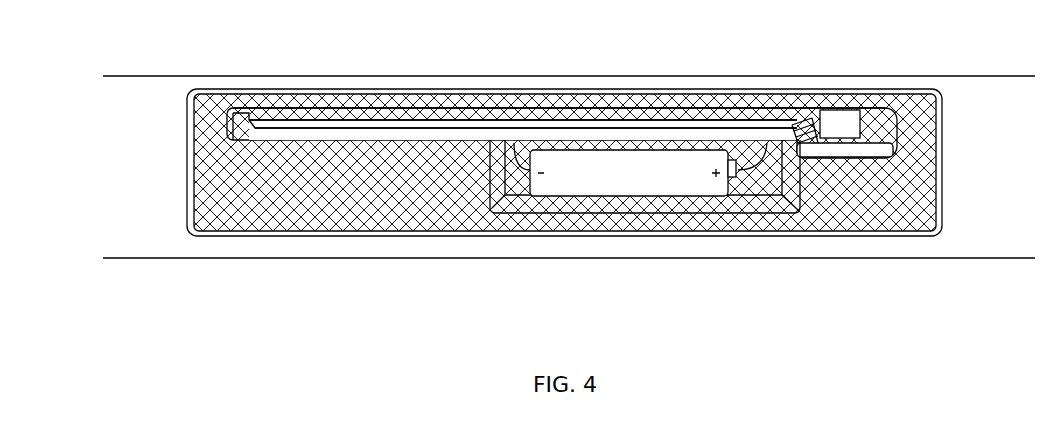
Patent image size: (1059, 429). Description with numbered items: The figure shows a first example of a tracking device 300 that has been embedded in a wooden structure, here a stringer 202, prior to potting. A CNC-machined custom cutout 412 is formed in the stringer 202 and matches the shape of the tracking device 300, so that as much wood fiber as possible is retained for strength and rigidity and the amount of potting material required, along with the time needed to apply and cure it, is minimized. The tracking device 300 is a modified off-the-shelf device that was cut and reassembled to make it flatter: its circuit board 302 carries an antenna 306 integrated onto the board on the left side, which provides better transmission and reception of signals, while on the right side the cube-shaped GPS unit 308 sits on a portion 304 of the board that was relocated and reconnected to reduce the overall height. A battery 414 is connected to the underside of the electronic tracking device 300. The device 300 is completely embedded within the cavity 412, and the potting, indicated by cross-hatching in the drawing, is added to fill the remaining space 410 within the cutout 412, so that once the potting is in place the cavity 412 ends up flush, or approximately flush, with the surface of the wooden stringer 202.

The stringer 202 is at (897, 76).
The tracking device 300 is at (255, 138).
The circuit board 302 is at (632, 122).
The portion of the board 304 is at (853, 152).
The antenna 306 is at (350, 135).
The GPS unit 308 is at (833, 120).
The remaining space 410 is at (414, 180).
The custom cutout 412 is at (763, 197).
The battery 414 is at (633, 183).